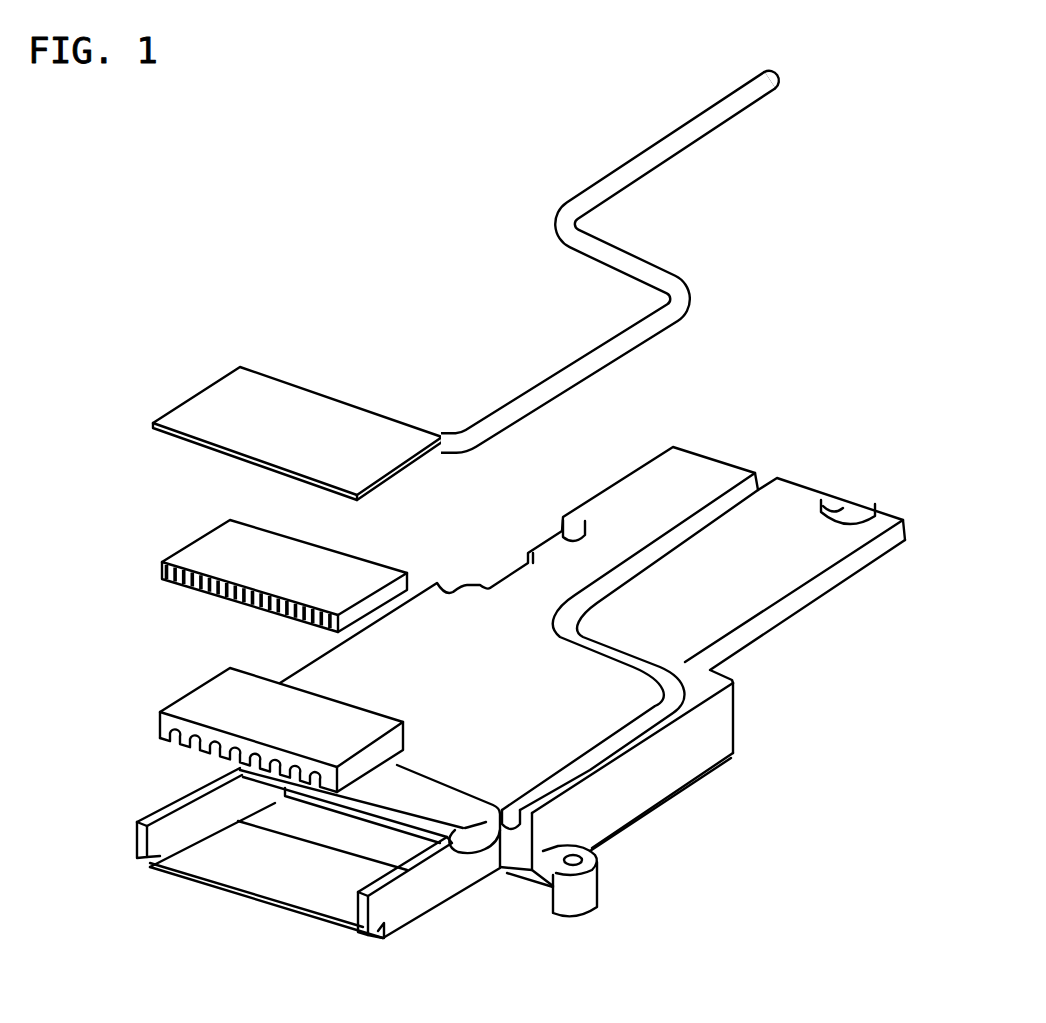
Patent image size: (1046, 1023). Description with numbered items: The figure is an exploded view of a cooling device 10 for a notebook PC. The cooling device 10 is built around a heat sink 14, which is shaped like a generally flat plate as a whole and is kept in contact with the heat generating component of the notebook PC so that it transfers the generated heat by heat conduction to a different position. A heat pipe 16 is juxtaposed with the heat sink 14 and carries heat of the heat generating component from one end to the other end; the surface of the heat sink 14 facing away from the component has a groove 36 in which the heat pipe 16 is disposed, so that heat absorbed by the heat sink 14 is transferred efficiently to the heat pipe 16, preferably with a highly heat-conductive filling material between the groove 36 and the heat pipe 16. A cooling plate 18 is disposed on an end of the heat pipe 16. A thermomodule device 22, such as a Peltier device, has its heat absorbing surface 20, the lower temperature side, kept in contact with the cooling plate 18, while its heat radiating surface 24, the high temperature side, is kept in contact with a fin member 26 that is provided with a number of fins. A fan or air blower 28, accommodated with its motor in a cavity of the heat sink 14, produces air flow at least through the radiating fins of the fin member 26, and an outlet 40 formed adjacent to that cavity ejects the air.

The cooling device 10 is at (293, 263).
The heat sink 14 is at (592, 650).
The heat pipe 16 is at (694, 290).
The cooling plate 18 is at (350, 422).
The heat absorbing surface 20 is at (348, 575).
The thermomodule device 22 is at (283, 554).
The heat radiating surface 24 is at (233, 603).
The fin member 26 is at (188, 686).
The air blower 28 is at (590, 722).
The groove 36 is at (645, 553).
The outlet 40 is at (269, 885).